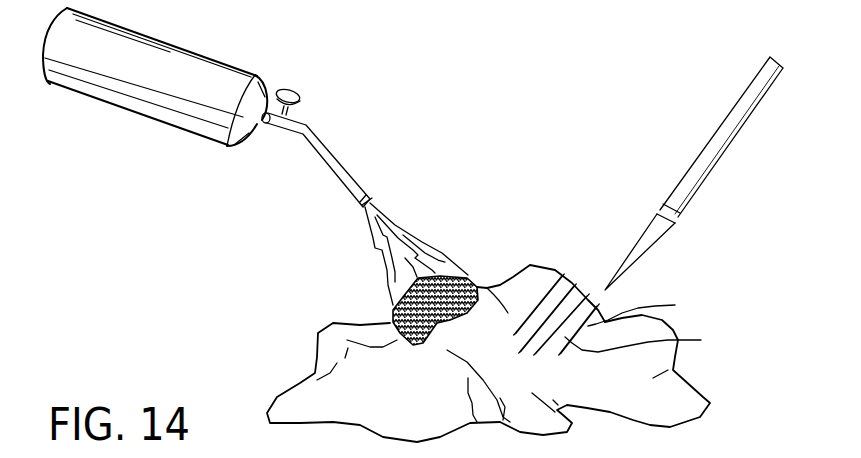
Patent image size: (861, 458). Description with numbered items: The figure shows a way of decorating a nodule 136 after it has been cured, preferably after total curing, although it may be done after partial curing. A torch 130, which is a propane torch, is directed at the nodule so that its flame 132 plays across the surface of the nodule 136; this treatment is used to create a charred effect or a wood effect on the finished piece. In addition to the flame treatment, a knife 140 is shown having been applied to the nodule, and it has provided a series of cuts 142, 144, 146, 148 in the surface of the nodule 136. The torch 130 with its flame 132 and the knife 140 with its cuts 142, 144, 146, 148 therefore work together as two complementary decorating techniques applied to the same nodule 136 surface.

The torch 130 is at (136, 126).
The flame 132 is at (383, 265).
The nodule 136 is at (713, 397).
The knife 140 is at (697, 160).
The cut 142 is at (513, 316).
The cut 144 is at (554, 284).
The cut 146 is at (655, 307).
The cut 148 is at (658, 343).